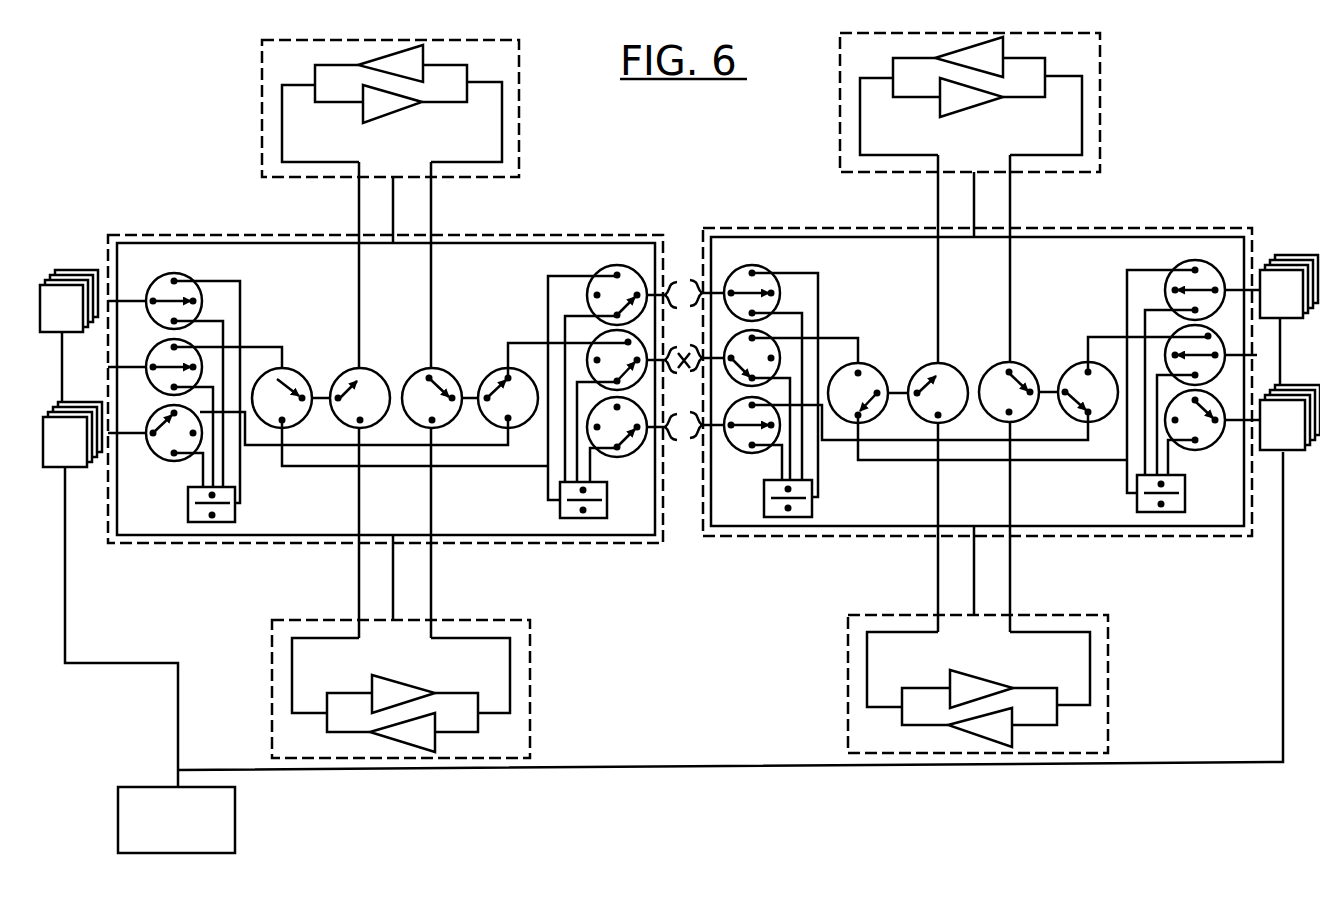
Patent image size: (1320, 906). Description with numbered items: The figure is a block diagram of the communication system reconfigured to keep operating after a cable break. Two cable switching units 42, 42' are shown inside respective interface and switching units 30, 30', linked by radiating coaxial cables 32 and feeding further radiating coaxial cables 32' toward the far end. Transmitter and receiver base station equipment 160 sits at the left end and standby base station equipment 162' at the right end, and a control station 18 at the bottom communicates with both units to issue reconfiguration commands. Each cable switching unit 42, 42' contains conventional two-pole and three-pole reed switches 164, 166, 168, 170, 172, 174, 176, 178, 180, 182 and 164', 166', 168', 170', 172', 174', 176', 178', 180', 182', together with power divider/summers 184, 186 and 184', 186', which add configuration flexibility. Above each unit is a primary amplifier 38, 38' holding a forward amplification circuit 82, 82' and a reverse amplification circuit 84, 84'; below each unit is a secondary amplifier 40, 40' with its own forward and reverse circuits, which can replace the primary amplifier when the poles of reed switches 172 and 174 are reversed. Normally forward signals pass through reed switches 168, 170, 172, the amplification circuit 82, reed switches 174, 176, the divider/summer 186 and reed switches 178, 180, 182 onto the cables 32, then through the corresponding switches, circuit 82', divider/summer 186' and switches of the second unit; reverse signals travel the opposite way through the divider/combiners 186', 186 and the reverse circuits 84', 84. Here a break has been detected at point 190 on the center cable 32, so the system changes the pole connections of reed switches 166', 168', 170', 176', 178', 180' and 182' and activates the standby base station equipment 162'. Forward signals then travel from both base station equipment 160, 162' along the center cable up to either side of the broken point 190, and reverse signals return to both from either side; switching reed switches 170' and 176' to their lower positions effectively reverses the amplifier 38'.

The control station 18 is at (237, 812).
The interface and switching unit 30 is at (385, 366).
The interface and switching unit 30' is at (977, 361).
The radiating coaxial cable 32 is at (133, 366).
The radiating coaxial cable 32' is at (1234, 356).
The primary amplifier 38 is at (422, 108).
The primary amplifier 38' is at (1003, 102).
The secondary amplifier 40 is at (431, 689).
The secondary amplifier 40' is at (1011, 684).
The cable switching unit 42 is at (386, 417).
The cable switching unit 42' is at (977, 411).
The amplification circuit 82 is at (412, 399).
The amplification circuit 82' is at (992, 393).
The amplification circuit 84 is at (376, 402).
The amplification circuit 84' is at (949, 396).
The base station equipment 160 is at (72, 268).
The base station equipment 162' is at (1276, 391).
The reed switch 164 is at (199, 291).
The reed switch 164' is at (780, 284).
The reed switch 166 is at (219, 341).
The reed switch 166' is at (807, 332).
The reed switch 168 is at (171, 461).
The reed switch 168' is at (747, 454).
The reed switch 170 is at (284, 372).
The reed switch 170' is at (864, 366).
The reed switch 172 is at (376, 372).
The reed switch 172' is at (956, 366).
The reed switch 174 is at (439, 376).
The reed switch 174' is at (1020, 370).
The reed switch 176 is at (491, 435).
The reed switch 176' is at (1069, 432).
The reed switch 178 is at (589, 286).
The reed switch 178' is at (1167, 281).
The reed switch 180 is at (561, 337).
The reed switch 180' is at (1140, 331).
The reed switch 182 is at (619, 452).
The reed switch 182' is at (1205, 455).
The power divider/summer 184 is at (249, 509).
The power divider/summer 184' is at (828, 502).
The power divider/summer 186 is at (546, 502).
The power divider/summer 186' is at (1123, 496).
The broken point 190 is at (682, 346).